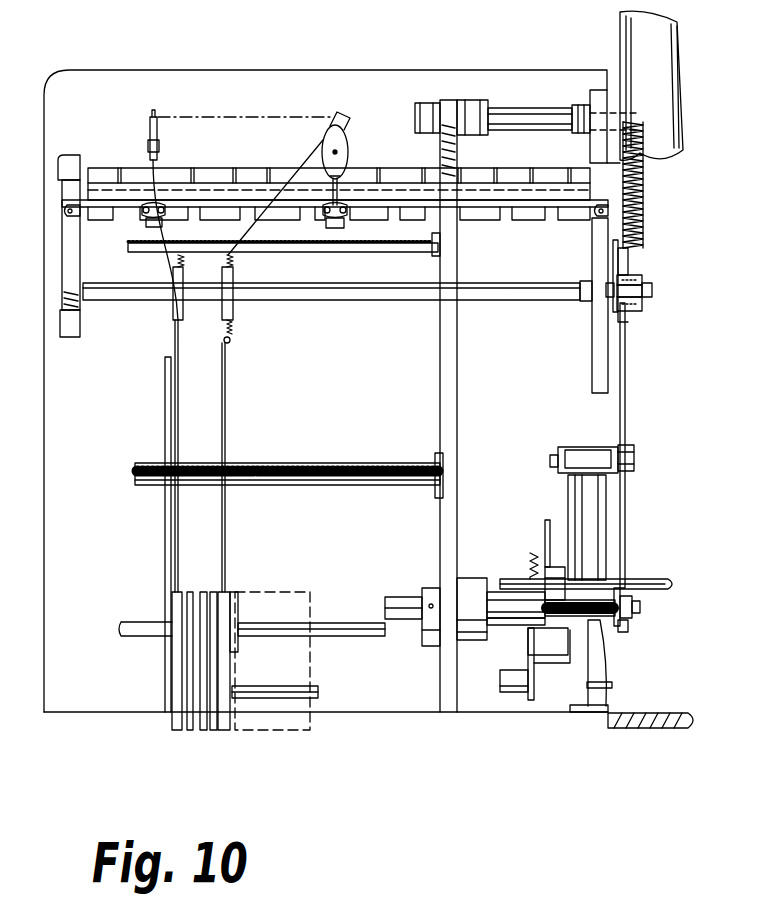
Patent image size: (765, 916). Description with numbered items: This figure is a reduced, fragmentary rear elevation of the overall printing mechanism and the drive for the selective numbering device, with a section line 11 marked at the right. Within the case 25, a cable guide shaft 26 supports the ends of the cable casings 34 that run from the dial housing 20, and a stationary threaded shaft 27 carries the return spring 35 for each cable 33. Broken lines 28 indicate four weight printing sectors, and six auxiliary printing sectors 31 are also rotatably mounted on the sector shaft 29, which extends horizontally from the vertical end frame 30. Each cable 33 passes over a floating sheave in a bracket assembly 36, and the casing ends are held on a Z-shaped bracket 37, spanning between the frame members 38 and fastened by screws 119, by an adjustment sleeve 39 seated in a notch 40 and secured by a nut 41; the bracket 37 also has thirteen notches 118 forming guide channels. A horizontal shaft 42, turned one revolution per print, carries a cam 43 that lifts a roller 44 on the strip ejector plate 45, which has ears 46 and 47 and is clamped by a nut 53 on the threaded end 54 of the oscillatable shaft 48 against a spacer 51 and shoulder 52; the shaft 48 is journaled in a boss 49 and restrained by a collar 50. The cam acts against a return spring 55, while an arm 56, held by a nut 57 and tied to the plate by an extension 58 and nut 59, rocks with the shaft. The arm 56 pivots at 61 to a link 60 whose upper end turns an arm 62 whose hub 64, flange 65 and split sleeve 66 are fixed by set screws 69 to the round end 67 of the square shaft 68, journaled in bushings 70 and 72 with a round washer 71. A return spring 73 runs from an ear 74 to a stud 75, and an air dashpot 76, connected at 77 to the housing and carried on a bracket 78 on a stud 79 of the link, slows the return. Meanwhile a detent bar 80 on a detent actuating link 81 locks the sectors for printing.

The section line 11- 11 is at (662, 13).
The dial housing 20 is at (623, 30).
The case 25 is at (296, 70).
The cable guide shaft 26 is at (331, 463).
The threaded shaft 27 is at (369, 251).
The printing sectors 28 is at (305, 661).
The sector shaft 29 is at (333, 624).
The end frame 30 is at (438, 393).
The auxiliary printing sectors 31 is at (191, 731).
The cables 33 is at (181, 492).
The cable casings 34 is at (344, 194).
The return spring 35 is at (183, 269).
The bracket assembly 36 is at (158, 152).
The bracket 37 is at (515, 222).
The frame members 38 is at (65, 320).
The adjustment sleeve 39 is at (328, 213).
The notch 40 is at (228, 216).
The nut 41 is at (148, 225).
The horizontal shaft 42 is at (675, 584).
The cam 43 is at (548, 520).
The roller 44 is at (562, 578).
The strip ejector plate 45 is at (540, 675).
The ear 46 is at (548, 664).
The ear 47 is at (505, 691).
The oscillatable shaft 48 is at (406, 598).
The boss 49 is at (466, 578).
The collar 50 is at (426, 588).
The spacer 51 is at (520, 628).
The shoulder 52 is at (500, 602).
The nut 53 is at (548, 664).
The threaded end 54 is at (582, 600).
The return spring 55 is at (528, 553).
The arm 56 is at (605, 640).
The nut 57 is at (625, 630).
The extension 58 is at (590, 578).
The nut 59 is at (632, 600).
The link 60 is at (626, 505).
The pivot 61 is at (638, 612).
The arm 62 is at (621, 262).
The hub 64 is at (638, 312).
The flange 65 is at (619, 322).
The split sleeve 66 is at (652, 290).
The round end 67 is at (643, 300).
The square shaft 68 is at (524, 284).
The set screws 69 is at (643, 279).
The bushing 70 is at (607, 288).
The round washer 71 is at (583, 302).
The bushing 72 is at (82, 290).
The return spring 73 is at (644, 212).
The ear 74 is at (622, 250).
The stud 75 is at (527, 110).
The air dashpot 76 is at (568, 489).
The plunger connection 77 is at (612, 688).
The bracket 78 is at (558, 448).
The stud 79 is at (636, 459).
The detent bar 80 is at (318, 693).
The detent actuating link 81 is at (165, 554).
The notch 118 is at (568, 172).
The screws 119 is at (75, 209).